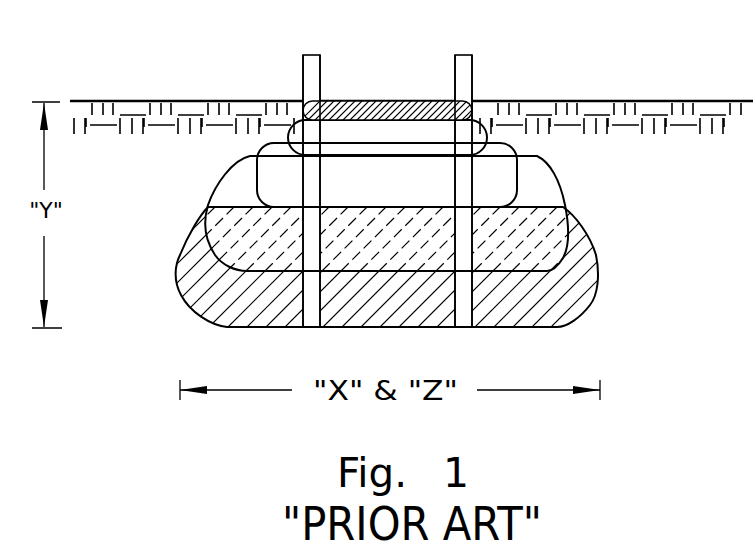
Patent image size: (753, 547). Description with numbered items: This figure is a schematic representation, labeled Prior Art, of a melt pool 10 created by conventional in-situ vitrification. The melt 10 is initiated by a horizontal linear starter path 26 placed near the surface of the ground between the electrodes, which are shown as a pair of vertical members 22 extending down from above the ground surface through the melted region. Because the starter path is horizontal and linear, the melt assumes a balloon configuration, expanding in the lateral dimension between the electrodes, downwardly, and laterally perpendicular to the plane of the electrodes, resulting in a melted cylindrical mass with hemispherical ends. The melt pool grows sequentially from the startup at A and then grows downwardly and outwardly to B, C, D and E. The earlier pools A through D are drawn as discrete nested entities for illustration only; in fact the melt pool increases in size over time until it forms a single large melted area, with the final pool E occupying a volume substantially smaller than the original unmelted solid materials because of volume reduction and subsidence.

The melt pool 10 is at (398, 251).
The post 22 is at (318, 80).
The horizontal linear starter path 26 is at (425, 100).
The startup melt pool A is at (477, 103).
The melt pool growth stage B is at (487, 132).
The melt pool growth stage C is at (517, 178).
The melt pool growth stage D is at (563, 252).
The final melt pool E is at (563, 298).